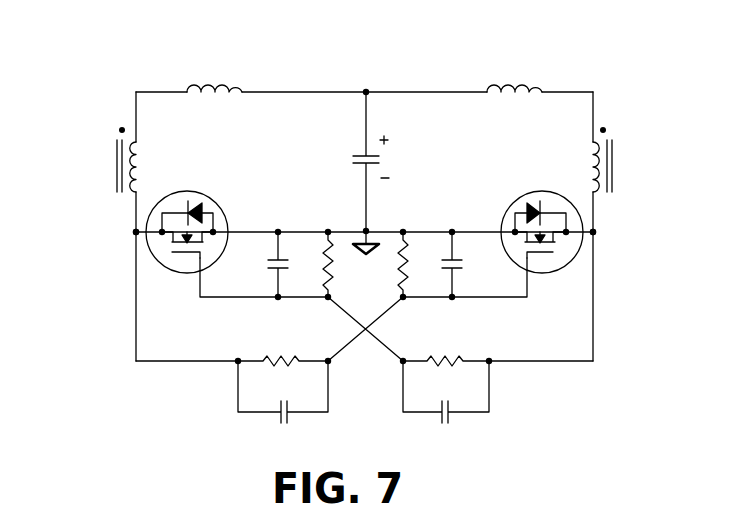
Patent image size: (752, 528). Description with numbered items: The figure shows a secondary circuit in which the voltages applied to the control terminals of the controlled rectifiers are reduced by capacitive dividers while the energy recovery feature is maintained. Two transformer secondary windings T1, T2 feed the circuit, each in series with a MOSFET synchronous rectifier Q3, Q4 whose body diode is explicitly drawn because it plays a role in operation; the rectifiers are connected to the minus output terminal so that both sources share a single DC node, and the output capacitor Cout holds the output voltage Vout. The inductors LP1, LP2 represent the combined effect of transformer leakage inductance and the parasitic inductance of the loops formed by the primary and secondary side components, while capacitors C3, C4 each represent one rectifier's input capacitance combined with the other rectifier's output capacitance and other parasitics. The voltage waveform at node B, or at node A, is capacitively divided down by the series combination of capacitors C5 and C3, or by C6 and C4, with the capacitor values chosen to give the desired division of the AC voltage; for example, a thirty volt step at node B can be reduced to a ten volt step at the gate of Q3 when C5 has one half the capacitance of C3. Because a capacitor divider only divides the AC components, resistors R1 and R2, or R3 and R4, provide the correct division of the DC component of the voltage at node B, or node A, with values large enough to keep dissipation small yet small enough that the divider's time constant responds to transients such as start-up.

The inductor LP1 is at (214, 68).
The inductor LP2 is at (514, 68).
The transformer secondary winding T1 is at (89, 159).
The transformer secondary winding T2 is at (635, 159).
The MOSFET synchronous rectifier Q3 is at (187, 218).
The MOSFET synchronous rectifier Q4 is at (542, 218).
The output capacitor Cout is at (329, 161).
The output voltage Vout is at (408, 165).
The resistor R1 is at (315, 264).
The resistor R2 is at (446, 346).
The resistor R3 is at (417, 264).
The resistor R4 is at (283, 346).
The capacitor C3 is at (262, 264).
The capacitor C4 is at (467, 264).
The capacitor C5 is at (446, 392).
The capacitor C6 is at (283, 392).
The node A is at (122, 234).
The node B is at (606, 235).